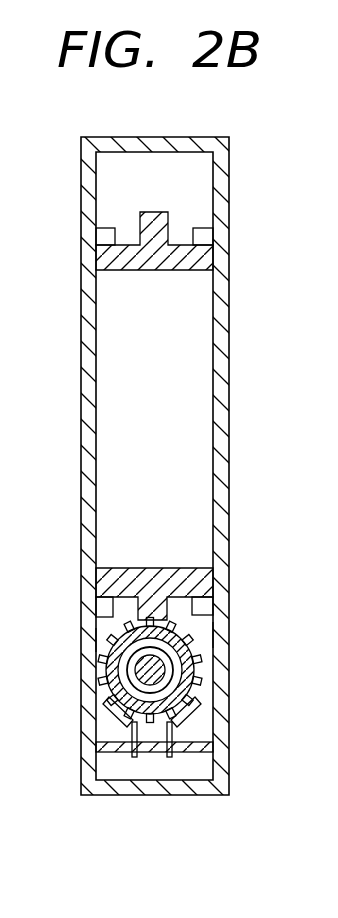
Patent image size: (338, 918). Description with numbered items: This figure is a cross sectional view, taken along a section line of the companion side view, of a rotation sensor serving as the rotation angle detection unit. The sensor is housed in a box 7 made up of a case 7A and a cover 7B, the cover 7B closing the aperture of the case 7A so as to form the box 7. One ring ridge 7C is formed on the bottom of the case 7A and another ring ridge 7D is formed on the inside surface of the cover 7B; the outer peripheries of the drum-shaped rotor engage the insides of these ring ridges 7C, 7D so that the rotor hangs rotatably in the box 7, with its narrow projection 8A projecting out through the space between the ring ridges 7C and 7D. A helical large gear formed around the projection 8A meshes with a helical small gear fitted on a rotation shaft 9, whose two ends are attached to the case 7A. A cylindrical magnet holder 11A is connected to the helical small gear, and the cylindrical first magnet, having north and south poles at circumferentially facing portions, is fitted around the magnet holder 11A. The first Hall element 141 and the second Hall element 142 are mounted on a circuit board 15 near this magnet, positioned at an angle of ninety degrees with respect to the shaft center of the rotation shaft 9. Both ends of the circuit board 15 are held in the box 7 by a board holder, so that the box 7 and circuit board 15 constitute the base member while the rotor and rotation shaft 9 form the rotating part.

The box 7 is at (234, 324).
The case 7A is at (222, 632).
The cover 7B is at (84, 637).
The ring ridge 7C is at (204, 236).
The ring ridge 7D is at (108, 240).
The projection 8A is at (172, 238).
The rotation shaft 9 is at (136, 675).
The magnet holder 11A is at (172, 671).
The first Hall element 141 is at (112, 716).
The second Hall element 142 is at (186, 714).
The circuit board 15 is at (177, 752).